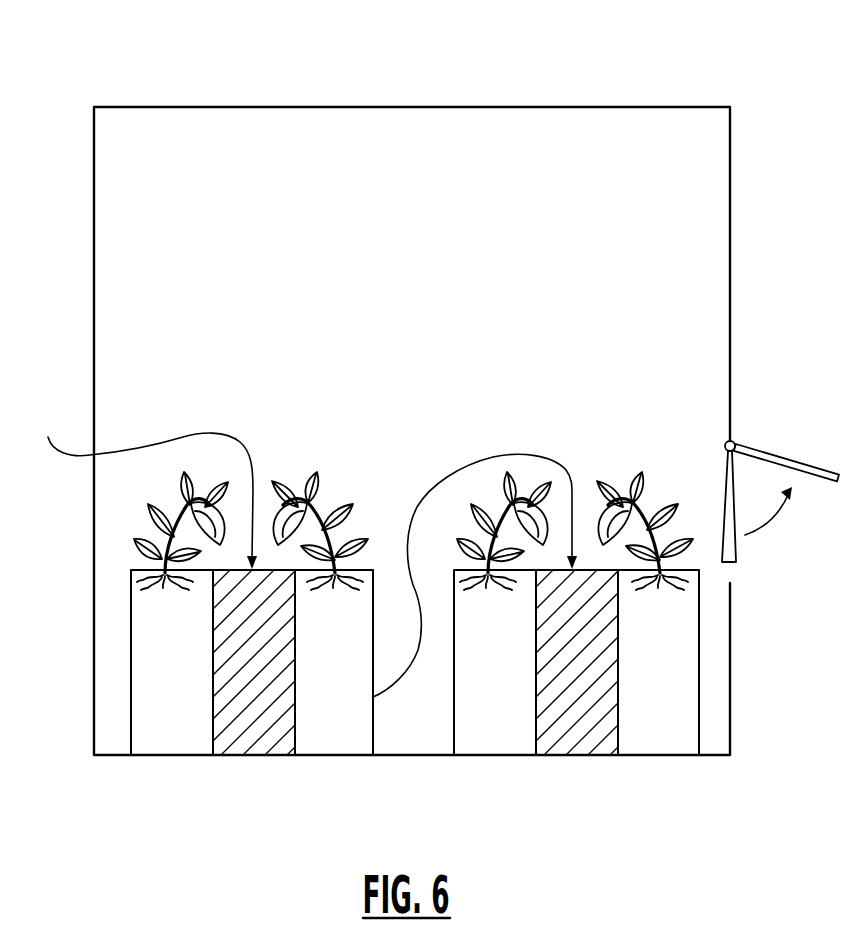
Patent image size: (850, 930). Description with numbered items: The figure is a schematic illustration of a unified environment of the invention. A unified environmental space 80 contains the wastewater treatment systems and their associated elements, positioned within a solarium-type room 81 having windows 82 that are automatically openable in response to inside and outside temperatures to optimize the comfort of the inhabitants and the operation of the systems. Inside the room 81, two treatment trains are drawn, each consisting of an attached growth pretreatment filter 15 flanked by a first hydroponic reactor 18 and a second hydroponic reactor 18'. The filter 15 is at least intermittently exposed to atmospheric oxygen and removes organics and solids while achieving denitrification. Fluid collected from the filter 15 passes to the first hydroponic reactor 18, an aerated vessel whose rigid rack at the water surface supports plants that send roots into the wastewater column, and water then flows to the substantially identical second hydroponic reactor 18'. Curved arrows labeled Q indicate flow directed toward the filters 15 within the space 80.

The unified environmental space 80 is at (421, 96).
The solarium-type room 81 is at (414, 278).
The windows 82 is at (798, 460).
The first hydroponic reactor 18 is at (341, 640).
The attached growth pretreatment filter 15 is at (255, 737).
The second hydroponic reactor 18' is at (485, 640).
The air flow Q is at (309, 551).